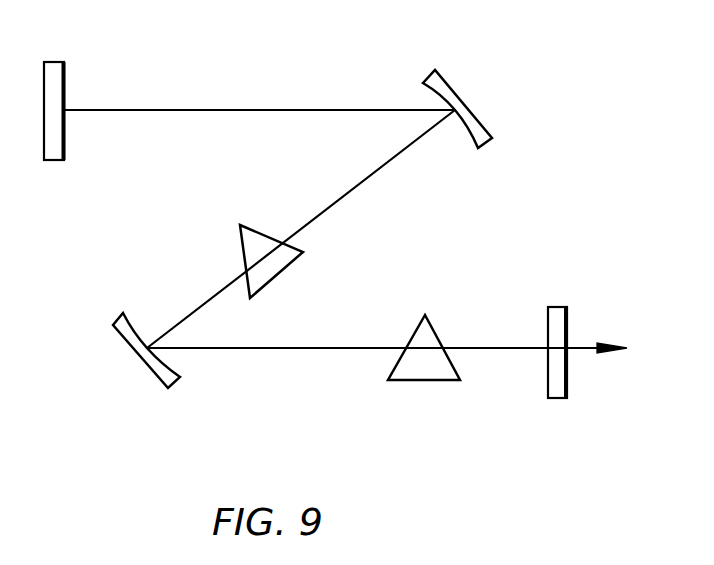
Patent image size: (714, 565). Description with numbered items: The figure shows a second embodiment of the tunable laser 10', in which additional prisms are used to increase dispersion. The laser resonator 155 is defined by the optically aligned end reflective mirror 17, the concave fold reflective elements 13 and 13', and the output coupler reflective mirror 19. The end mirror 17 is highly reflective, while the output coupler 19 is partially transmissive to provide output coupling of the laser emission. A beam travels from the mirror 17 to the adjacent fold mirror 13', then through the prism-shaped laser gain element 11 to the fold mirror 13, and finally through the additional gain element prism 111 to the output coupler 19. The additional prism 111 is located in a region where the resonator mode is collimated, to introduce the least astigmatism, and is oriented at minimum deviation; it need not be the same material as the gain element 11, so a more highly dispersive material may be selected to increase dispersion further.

The end reflective mirror 17 is at (66, 72).
The concave fold reflective element 13' is at (445, 86).
The laser gain element 11 is at (260, 232).
The concave fold reflective element 13 is at (136, 329).
The additional gain element prism 111 is at (415, 330).
The output coupler reflective mirror 19 is at (568, 315).
The laser resonator 155 is at (505, 225).
The tunable laser 10' is at (387, 400).